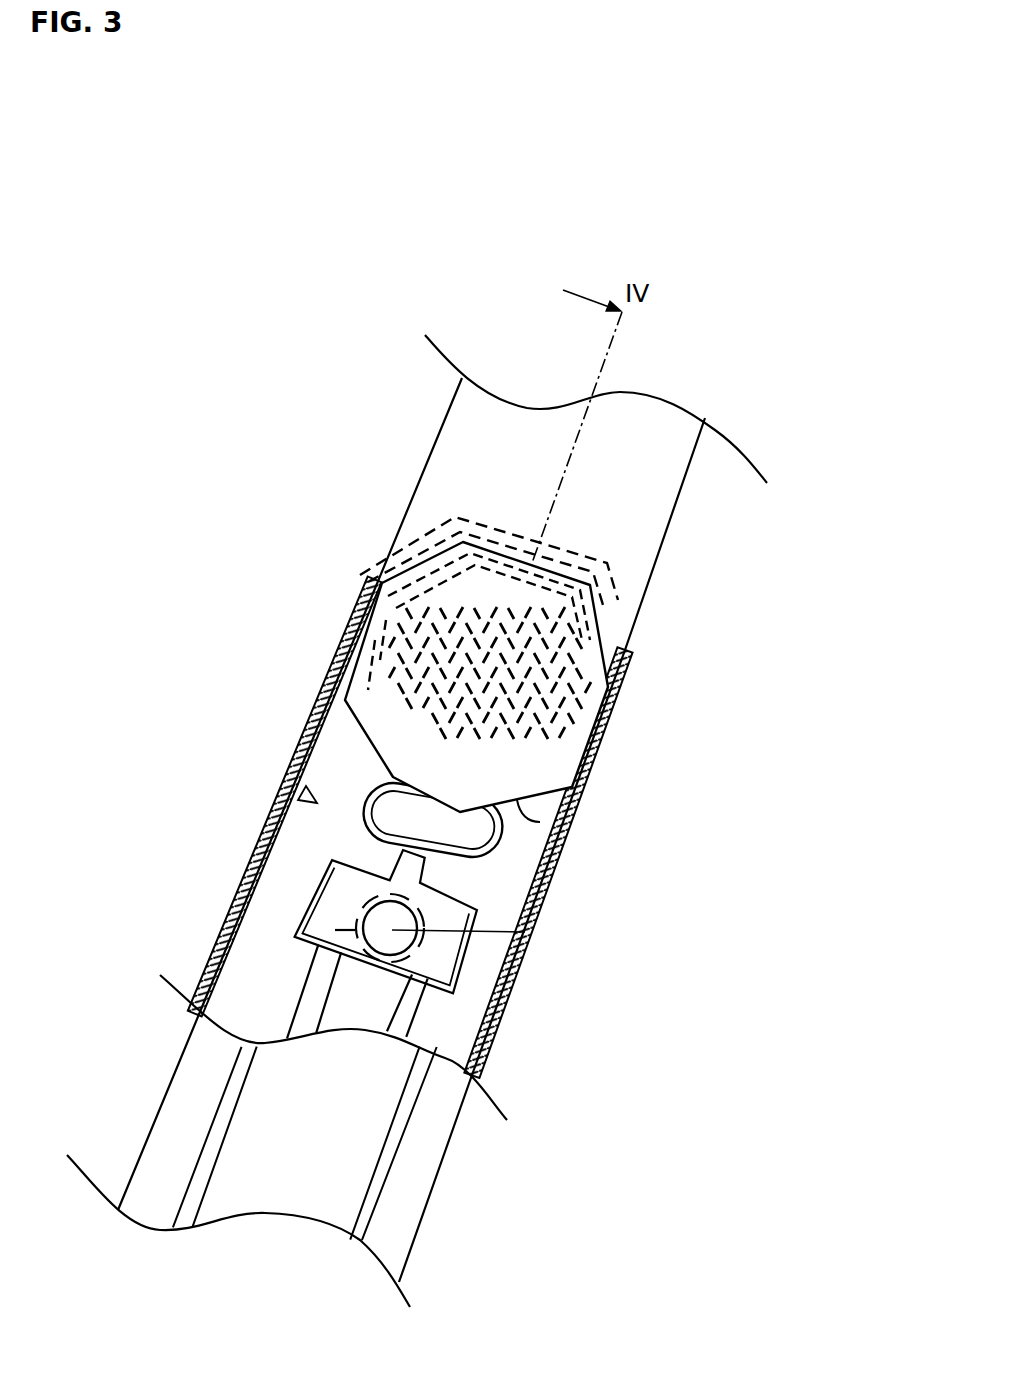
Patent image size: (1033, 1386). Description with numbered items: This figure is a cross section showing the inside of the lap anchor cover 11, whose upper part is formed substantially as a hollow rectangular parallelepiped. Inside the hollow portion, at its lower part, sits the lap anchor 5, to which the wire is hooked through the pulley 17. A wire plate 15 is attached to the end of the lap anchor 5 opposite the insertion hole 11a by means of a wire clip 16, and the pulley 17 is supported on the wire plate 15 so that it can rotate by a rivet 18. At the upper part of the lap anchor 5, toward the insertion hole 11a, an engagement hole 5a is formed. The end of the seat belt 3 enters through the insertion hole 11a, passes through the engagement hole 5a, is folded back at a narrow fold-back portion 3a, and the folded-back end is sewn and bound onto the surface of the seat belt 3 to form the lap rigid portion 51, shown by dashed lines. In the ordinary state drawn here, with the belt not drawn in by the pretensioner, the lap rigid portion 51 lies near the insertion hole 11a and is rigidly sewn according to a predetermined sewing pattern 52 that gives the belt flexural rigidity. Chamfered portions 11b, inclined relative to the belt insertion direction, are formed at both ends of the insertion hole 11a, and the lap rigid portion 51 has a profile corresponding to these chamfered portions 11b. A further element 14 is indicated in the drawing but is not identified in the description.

The seat belt 3 is at (653, 487).
The fold-back portion 3a is at (555, 830).
The lap anchor 5 is at (353, 760).
The engagement hole 5a is at (500, 843).
The lap anchor cover 11 is at (443, 1163).
The insertion hole 11a is at (640, 652).
The chamfered portions 11b is at (381, 565).
The gap 14 is at (303, 797).
The wire plate 15 is at (478, 887).
The wire clip 16 is at (347, 887).
The pulley 17 is at (305, 915).
The rivet 18 is at (480, 937).
The lap rigid portion 51 is at (468, 585).
The sewing pattern 52 is at (380, 657).